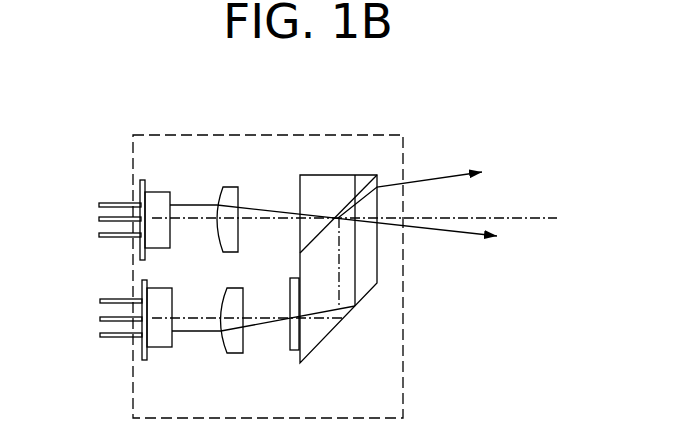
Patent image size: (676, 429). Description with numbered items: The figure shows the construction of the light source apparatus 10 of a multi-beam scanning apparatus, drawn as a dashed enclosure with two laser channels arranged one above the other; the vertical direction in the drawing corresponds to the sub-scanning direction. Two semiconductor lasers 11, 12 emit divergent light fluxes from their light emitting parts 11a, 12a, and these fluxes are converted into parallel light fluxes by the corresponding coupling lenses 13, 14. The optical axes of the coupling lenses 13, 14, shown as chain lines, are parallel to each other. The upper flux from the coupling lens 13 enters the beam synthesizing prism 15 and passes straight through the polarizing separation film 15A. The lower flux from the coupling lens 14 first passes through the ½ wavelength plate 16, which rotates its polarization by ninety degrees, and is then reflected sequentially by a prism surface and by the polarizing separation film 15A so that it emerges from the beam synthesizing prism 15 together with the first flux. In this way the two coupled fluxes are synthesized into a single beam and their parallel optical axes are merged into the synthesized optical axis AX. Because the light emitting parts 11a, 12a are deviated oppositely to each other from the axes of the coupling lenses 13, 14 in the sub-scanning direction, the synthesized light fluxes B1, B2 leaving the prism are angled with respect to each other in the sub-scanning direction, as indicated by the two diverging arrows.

The light source apparatus 10 is at (277, 135).
The semiconductor laser 11 is at (105, 239).
The light emitting part 11a is at (158, 203).
The semiconductor laser 12 is at (103, 339).
The light emitting part 12a is at (158, 333).
The coupling lens 13 is at (230, 195).
The coupling lens 14 is at (233, 345).
The beam synthesizing prism 15 is at (330, 327).
The polarizing separation film 15A is at (346, 205).
The ½ wavelength plate 16 is at (295, 341).
The synthesized optical axis AX is at (498, 217).
The light flux B1 is at (447, 231).
The light flux B2 is at (433, 177).